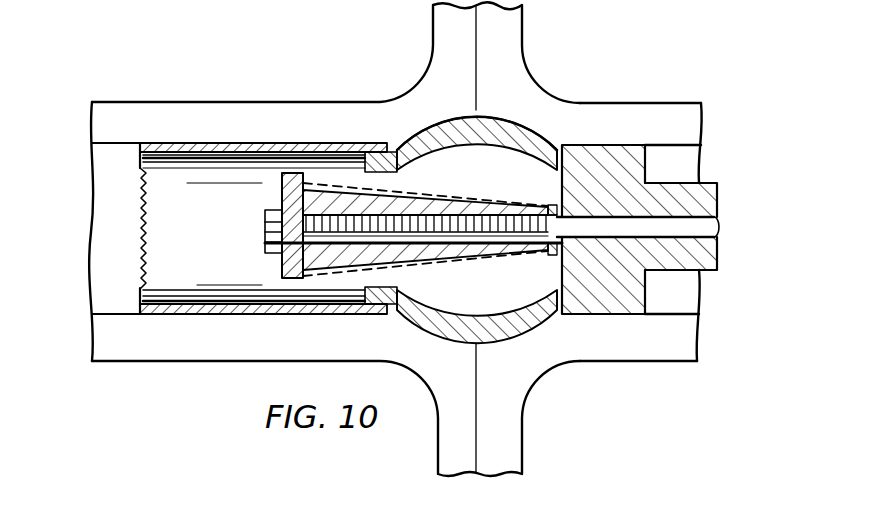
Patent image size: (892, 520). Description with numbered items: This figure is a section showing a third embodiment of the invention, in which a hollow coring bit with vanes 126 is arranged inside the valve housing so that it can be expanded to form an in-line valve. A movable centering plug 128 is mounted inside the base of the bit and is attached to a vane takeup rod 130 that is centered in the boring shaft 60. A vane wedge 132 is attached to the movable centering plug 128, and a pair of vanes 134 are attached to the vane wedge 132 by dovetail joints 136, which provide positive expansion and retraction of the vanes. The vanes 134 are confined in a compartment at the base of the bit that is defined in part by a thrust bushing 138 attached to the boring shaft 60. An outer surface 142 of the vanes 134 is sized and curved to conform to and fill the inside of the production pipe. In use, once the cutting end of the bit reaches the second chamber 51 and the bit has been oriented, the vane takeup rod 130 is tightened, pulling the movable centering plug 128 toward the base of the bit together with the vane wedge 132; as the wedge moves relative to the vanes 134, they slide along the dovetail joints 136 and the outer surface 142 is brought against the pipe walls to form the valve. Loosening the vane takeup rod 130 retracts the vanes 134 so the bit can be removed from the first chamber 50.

The first chamber 50 is at (672, 162).
The second chamber 51 is at (110, 245).
The boring shaft 60 is at (700, 200).
The hollow coring bit with vanes 126 is at (272, 143).
The movable centering plug 128 is at (283, 273).
The vane takeup rod 130 is at (704, 232).
The vane wedge 132 is at (358, 190).
The vanes 134 is at (527, 163).
The dovetail joints 136 is at (438, 176).
The thrust bushing 138 is at (578, 186).
The outer surface 142 is at (500, 170).